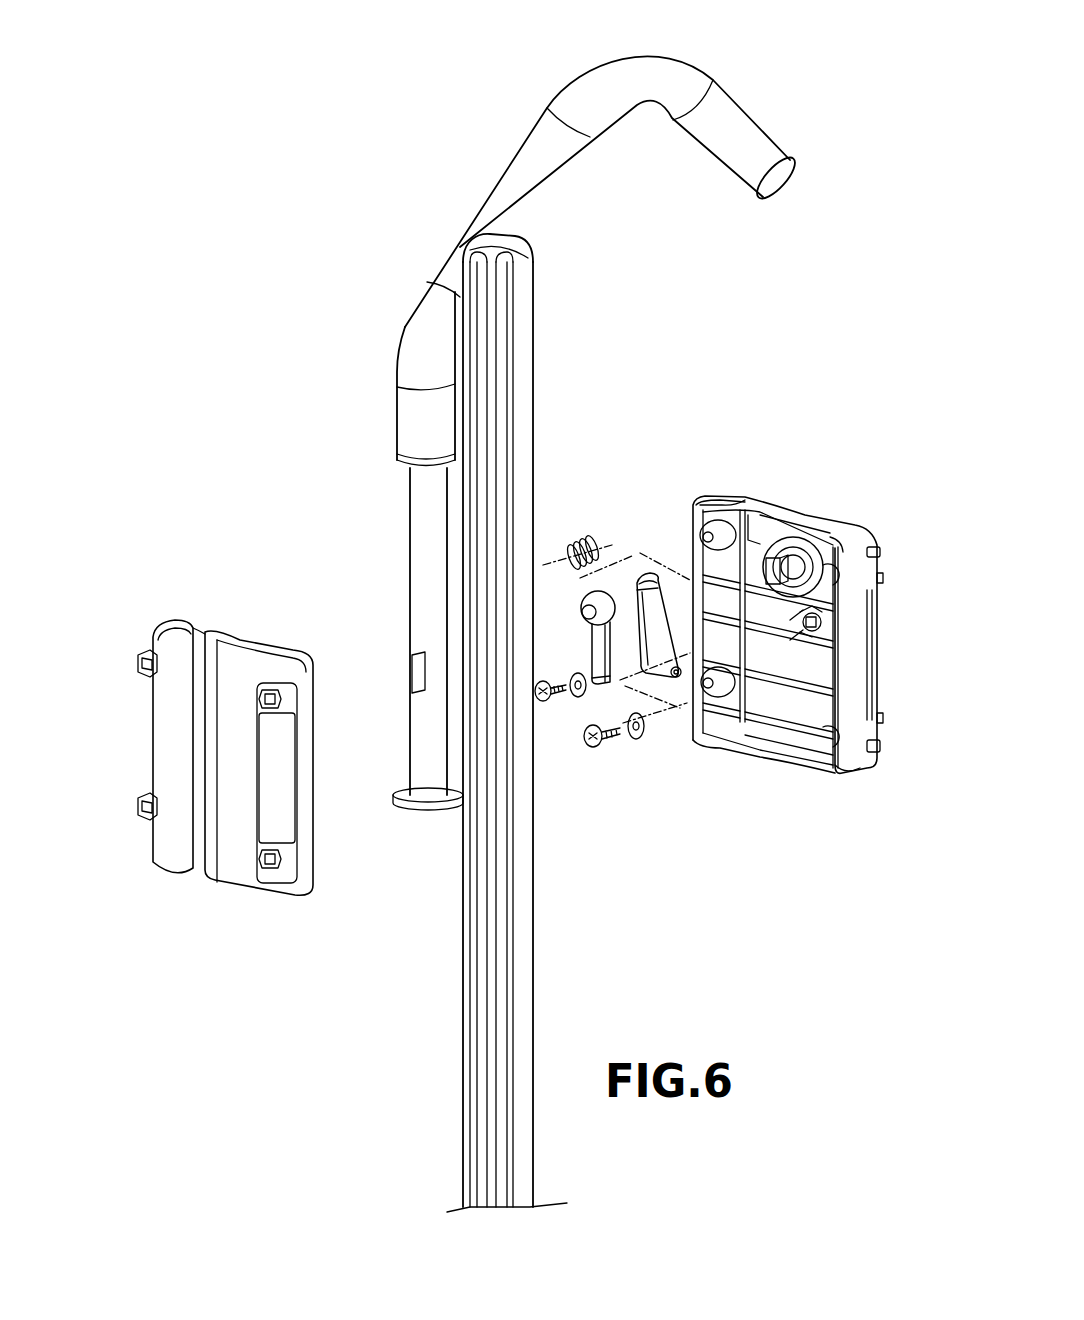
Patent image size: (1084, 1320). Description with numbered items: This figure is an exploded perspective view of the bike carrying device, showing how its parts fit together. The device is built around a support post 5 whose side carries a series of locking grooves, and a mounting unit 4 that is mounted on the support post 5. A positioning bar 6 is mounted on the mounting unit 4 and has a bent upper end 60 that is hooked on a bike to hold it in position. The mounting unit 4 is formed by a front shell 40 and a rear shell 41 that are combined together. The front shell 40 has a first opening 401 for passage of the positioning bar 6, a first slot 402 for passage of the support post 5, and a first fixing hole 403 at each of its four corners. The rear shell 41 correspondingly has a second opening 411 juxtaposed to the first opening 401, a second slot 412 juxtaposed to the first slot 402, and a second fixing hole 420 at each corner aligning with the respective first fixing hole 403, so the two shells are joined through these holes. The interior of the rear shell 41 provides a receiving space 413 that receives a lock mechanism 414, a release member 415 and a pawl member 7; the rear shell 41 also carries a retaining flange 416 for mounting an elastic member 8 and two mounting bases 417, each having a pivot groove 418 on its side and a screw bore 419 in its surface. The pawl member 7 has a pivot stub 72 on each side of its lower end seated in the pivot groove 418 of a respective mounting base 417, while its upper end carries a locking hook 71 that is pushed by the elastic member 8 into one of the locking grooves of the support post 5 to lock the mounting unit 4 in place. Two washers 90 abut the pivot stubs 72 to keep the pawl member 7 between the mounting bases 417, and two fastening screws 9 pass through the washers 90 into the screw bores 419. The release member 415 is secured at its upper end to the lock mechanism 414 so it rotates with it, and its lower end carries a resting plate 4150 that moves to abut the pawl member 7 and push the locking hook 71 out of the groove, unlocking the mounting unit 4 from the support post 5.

The mounting unit 4 is at (820, 644).
The support post 5 is at (475, 1055).
The positioning bar 6 is at (420, 513).
The pawl member 7 is at (664, 635).
The elastic member 8 is at (592, 538).
The fastening screw 9 is at (597, 747).
The front shell 40 is at (199, 755).
The rear shell 41 is at (857, 767).
The bent upper end 60 is at (508, 183).
The locking hook 71 is at (640, 553).
The pivot stub 72 is at (687, 703).
The washer 90 is at (638, 740).
The first opening 401 is at (193, 623).
The first slot 402 is at (260, 643).
The first fixing hole 403 is at (137, 817).
The second opening 411 is at (729, 488).
The second slot 412 is at (817, 520).
The receiving space 413 is at (755, 540).
The lock mechanism 414 is at (795, 547).
The release member 415 is at (574, 717).
The retaining flange 416 is at (843, 537).
The mounting base 417 is at (820, 622).
The pivot groove 418 is at (820, 628).
The screw bore 419 is at (807, 607).
The second fixing hole 420 is at (835, 770).
The resting plate 4150 is at (585, 705).